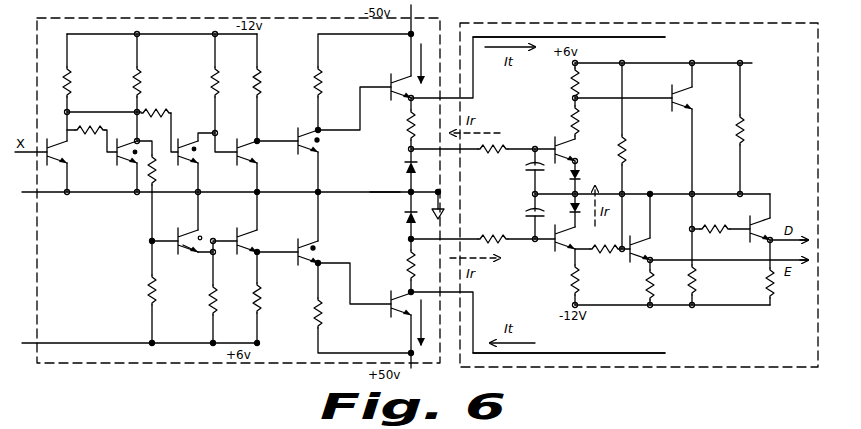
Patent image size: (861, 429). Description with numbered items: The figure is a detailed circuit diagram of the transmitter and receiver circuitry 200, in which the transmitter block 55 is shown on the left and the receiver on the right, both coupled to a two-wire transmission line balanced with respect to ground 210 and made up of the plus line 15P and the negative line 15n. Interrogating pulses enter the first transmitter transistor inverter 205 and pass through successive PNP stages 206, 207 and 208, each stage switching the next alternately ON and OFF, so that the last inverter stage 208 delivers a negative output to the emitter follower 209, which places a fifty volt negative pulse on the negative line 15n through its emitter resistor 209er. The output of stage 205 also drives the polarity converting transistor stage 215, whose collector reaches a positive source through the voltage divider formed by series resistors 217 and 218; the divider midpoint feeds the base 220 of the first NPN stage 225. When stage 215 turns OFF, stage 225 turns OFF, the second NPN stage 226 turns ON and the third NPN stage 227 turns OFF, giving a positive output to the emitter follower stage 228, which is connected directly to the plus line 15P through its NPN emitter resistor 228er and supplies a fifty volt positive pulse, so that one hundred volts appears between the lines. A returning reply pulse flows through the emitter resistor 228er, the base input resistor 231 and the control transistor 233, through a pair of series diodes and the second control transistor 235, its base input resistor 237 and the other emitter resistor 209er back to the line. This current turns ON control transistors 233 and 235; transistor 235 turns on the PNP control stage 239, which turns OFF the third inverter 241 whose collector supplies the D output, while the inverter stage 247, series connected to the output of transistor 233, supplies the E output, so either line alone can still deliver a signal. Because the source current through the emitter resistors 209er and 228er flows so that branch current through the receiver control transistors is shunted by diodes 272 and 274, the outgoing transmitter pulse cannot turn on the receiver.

The transmitter circuit block 55 is at (260, 421).
The transmitter and receiver circuitry 200 is at (557, 392).
The first transmitter transistor inverter 205 is at (63, 137).
The polarity converting transistor stage 215 is at (125, 166).
The series resistor 217 is at (154, 170).
The second transmitter inverter stage 206 is at (190, 138).
The third transmitter inverter stage 207 is at (251, 138).
The last inverter stage 208 is at (312, 128).
The emitter follower 209 is at (395, 78).
The emitter resistor 209er is at (410, 135).
The diode 272 is at (404, 160).
The ground 210 is at (385, 190).
The diode 274 is at (404, 211).
The NPN emitter resistor 228er is at (407, 249).
The emitter follower stage 228 is at (400, 286).
The base 220 is at (178, 229).
The first stage NPN transistor 225 is at (196, 253).
The series resistor 218 is at (156, 287).
The second NPN stage 226 is at (254, 259).
The third NPN stage 227 is at (310, 263).
The negative line 15n is at (605, 56).
The plus line 15P is at (607, 353).
The base input resistor 237 is at (496, 144).
The second control transistor 235 is at (581, 150).
The second series connected control stage 239 is at (682, 115).
The base input resistor 231 is at (502, 242).
The PNP control resistor 233 is at (560, 256).
The inverter stage 247 is at (654, 242).
The third inverter 241 is at (752, 238).